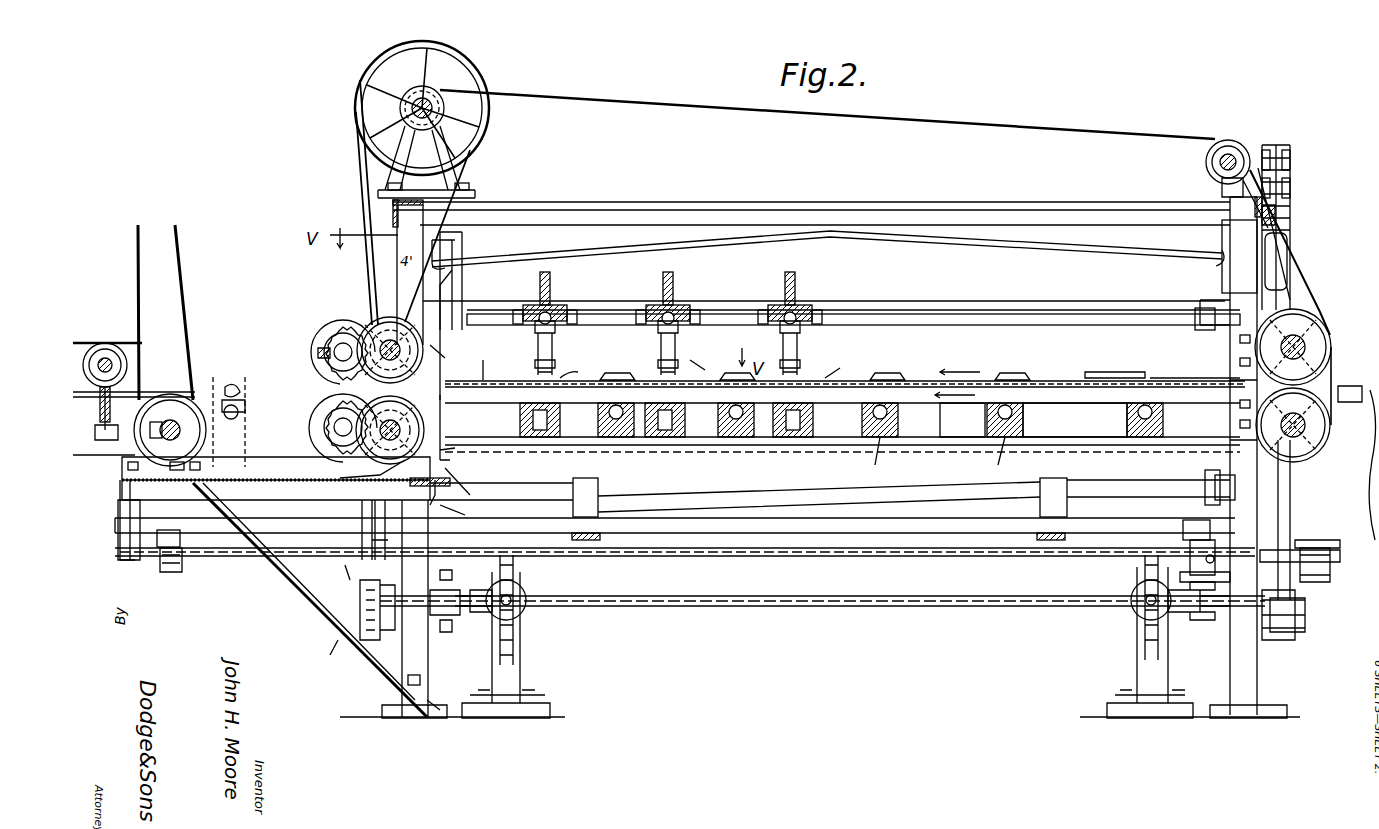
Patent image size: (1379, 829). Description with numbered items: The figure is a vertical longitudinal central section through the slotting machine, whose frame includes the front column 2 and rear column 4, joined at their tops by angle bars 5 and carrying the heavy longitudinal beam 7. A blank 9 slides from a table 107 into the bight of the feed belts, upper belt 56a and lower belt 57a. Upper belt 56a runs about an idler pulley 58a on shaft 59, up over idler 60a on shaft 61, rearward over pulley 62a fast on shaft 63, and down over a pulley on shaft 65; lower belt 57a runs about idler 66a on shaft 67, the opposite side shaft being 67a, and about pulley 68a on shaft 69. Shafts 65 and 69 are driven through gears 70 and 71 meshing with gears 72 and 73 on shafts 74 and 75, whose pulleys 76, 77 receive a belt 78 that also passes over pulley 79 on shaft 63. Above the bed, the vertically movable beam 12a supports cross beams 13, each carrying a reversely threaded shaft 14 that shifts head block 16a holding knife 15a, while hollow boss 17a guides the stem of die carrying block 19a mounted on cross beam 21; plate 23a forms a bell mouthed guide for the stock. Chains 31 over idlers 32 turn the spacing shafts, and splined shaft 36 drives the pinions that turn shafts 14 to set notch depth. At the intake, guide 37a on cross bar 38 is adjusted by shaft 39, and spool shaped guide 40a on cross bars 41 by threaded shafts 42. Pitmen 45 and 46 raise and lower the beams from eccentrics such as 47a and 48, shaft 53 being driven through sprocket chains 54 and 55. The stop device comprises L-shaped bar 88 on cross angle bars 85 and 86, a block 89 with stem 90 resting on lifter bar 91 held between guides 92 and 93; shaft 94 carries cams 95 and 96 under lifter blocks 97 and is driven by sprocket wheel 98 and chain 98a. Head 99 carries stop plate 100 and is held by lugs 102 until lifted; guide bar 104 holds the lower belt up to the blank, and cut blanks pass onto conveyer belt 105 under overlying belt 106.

The front column 2 is at (1240, 263).
The rear column 4 is at (430, 665).
The angle bar 5 is at (650, 205).
The longitudinal beam 7 is at (819, 497).
The blank 9 is at (483, 361).
The beam 12a is at (853, 301).
The cross beam 13 is at (553, 288).
The shaft 14 is at (540, 312).
The knife 15a is at (560, 360).
The head block 16a is at (812, 345).
The hollow boss 17a is at (699, 355).
The die carrying block 19a is at (748, 462).
The cross beam 21 is at (522, 425).
The plate 23a is at (590, 374).
The chain 31 is at (1292, 200).
The idler 32 is at (1290, 148).
The splined shaft 36 is at (1045, 320).
The guide 37a is at (1179, 363).
The cross bar 38 is at (1163, 422).
The shaft 39 is at (1125, 420).
The spool shaped guide 40a is at (815, 370).
The cross bar 41 is at (900, 422).
The threaded shaft 42 is at (938, 455).
The pitman 45 is at (1280, 515).
The pitman 46 is at (355, 562).
The eccentric 47a is at (1272, 640).
The eccentric 48 is at (360, 592).
The shaft 53 is at (706, 606).
The sprocket chain 54 is at (1140, 565).
The sprocket chain 55 is at (515, 565).
The endless feed belt 56a is at (1075, 372).
The endless feed belt 57a is at (1105, 372).
The idler pulley 58a is at (1318, 358).
The shaft 59 is at (1300, 338).
The idler 60a is at (1222, 164).
The shaft 61 is at (1222, 160).
The pulley 62a is at (448, 96).
The shaft 63 is at (440, 110).
The shaft 65 is at (368, 328).
The idler 66a is at (1300, 440).
The shaft 67 is at (1305, 428).
The shaft 67a is at (449, 350).
The pulley 68a is at (405, 483).
The shaft 69 is at (420, 438).
The gear 70 is at (462, 335).
The gear 71 is at (440, 495).
The gear 72 is at (335, 335).
The gear 73 is at (322, 412).
The shaft 74 is at (325, 347).
The shaft 75 is at (325, 430).
The pulley 76 is at (322, 333).
The pulley 77 is at (352, 468).
The belt 78 is at (352, 148).
The pulley 79 is at (465, 135).
The cross angle bar 85 is at (1265, 492).
The cross angle bar 86 is at (380, 512).
The L-shaped bar 88 is at (940, 480).
The block 89 is at (482, 490).
The stem 90 is at (463, 517).
The lifter bar 91 is at (752, 518).
The fixed guide 92 is at (598, 502).
The fixed guide 93 is at (1067, 500).
The shaft 94 is at (238, 556).
The cam 95 is at (180, 570).
The cam 96 is at (1195, 578).
The lifter block 97 is at (1195, 525).
The sprocket wheel 98 is at (1312, 565).
The sprocket chain 98a is at (1320, 582).
The head 99 is at (240, 412).
The stop plate 100 is at (245, 395).
The lug 102 is at (468, 448).
The guide bar 104 is at (962, 420).
The conveyer belt 105 is at (160, 395).
The overlying belt 106 is at (95, 340).
The table 107 is at (1345, 386).